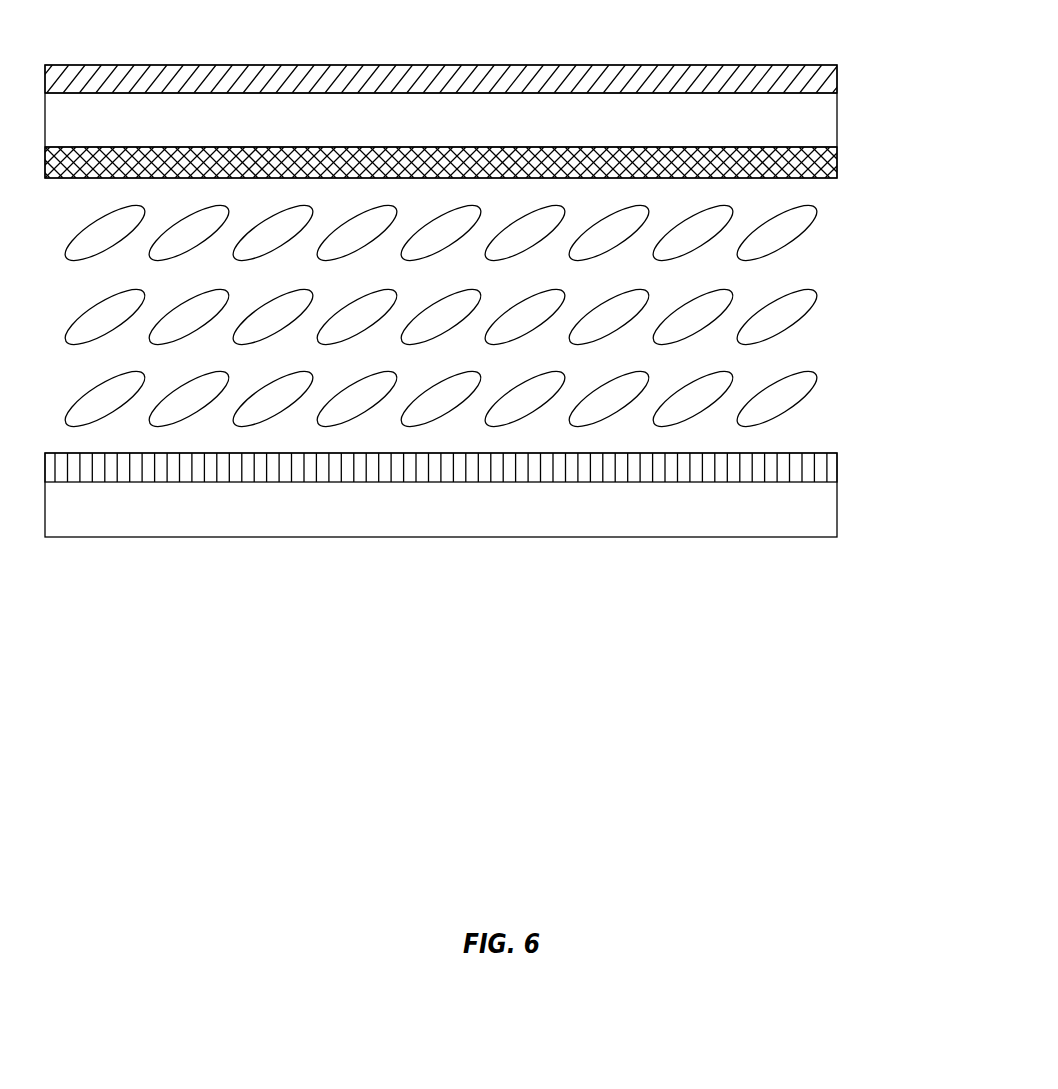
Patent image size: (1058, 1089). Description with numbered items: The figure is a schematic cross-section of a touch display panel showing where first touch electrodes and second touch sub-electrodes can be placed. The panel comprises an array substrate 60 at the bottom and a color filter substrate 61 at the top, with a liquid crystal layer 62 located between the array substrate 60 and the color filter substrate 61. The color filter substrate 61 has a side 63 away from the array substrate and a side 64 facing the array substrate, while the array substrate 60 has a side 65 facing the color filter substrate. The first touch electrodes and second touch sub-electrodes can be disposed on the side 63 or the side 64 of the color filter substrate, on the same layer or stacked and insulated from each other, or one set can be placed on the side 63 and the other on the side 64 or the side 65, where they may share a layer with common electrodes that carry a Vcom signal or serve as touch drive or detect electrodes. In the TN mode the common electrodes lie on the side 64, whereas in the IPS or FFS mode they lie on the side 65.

The array substrate 60 is at (838, 503).
The color filter substrate 61 is at (838, 105).
The liquid crystal layer 62 is at (822, 343).
The side of the color filter substrate away from the array substrate 63 is at (553, 65).
The side of the color filter substrate facing the array substrate 64 is at (820, 178).
The side of the array substrate facing the color filter substrate 65 is at (808, 452).